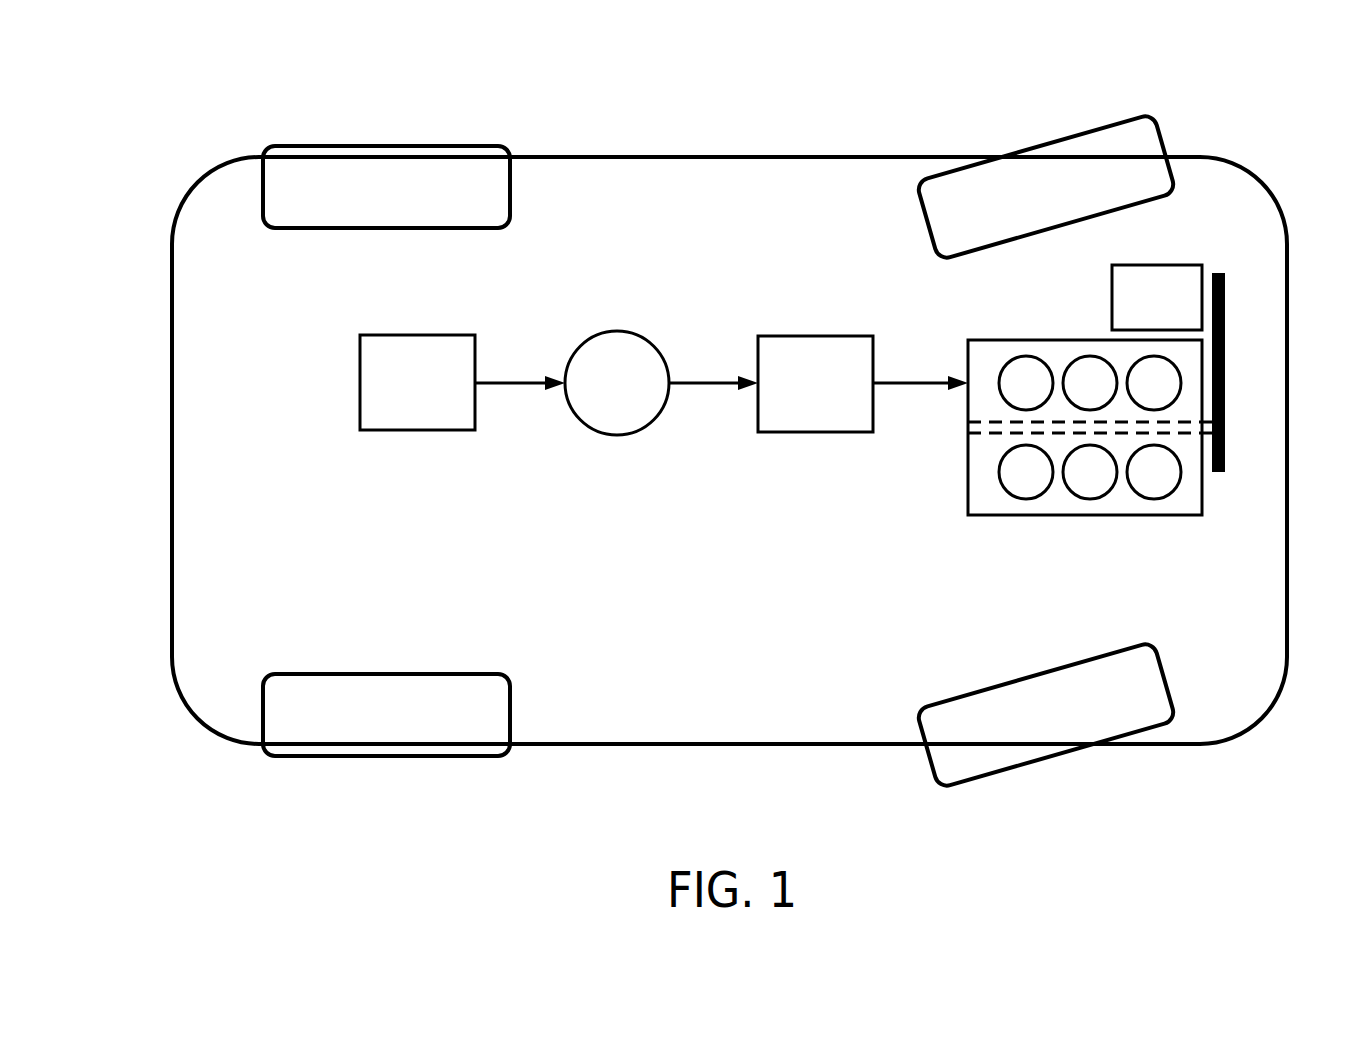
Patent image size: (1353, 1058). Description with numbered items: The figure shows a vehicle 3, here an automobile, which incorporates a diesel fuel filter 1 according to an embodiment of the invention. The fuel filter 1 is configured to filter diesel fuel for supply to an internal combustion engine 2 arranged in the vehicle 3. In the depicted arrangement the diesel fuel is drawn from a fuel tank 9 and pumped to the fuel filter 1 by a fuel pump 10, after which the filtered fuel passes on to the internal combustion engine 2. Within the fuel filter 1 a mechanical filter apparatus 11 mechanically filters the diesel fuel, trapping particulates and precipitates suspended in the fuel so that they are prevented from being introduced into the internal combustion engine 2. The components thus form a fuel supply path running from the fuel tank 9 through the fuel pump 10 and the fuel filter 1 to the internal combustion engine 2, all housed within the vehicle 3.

The diesel fuel filter 1 is at (748, 308).
The internal combustion engine 2 is at (1190, 508).
The vehicle 3 is at (178, 109).
The fuel tank 9 is at (402, 430).
The fuel pump 10 is at (595, 430).
The mechanical filter apparatus 11 is at (958, 483).